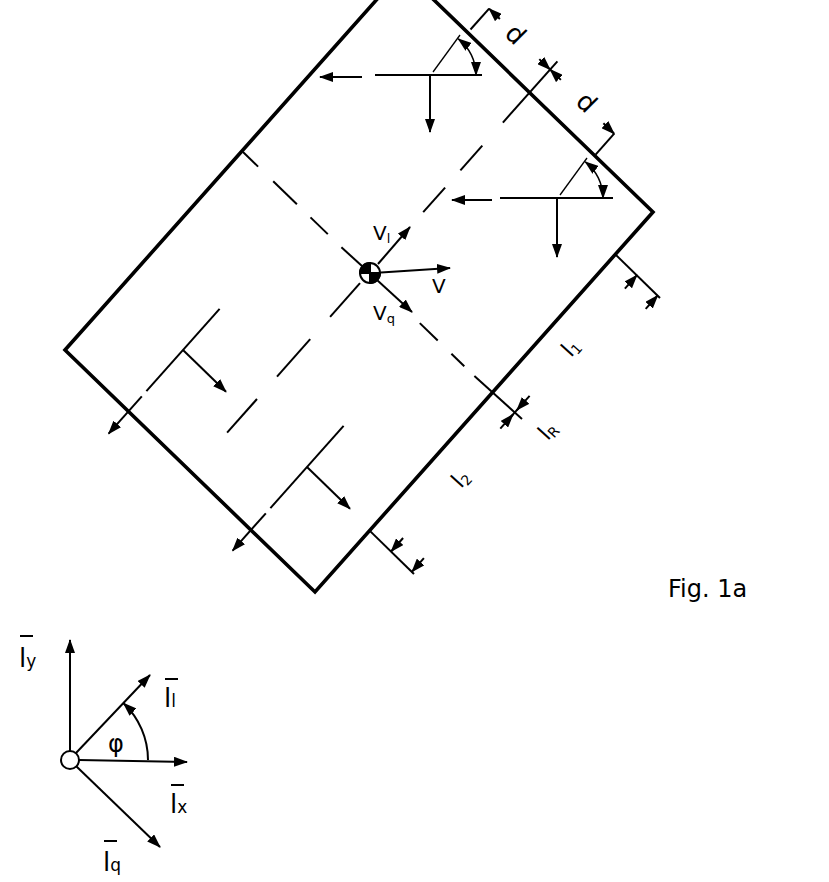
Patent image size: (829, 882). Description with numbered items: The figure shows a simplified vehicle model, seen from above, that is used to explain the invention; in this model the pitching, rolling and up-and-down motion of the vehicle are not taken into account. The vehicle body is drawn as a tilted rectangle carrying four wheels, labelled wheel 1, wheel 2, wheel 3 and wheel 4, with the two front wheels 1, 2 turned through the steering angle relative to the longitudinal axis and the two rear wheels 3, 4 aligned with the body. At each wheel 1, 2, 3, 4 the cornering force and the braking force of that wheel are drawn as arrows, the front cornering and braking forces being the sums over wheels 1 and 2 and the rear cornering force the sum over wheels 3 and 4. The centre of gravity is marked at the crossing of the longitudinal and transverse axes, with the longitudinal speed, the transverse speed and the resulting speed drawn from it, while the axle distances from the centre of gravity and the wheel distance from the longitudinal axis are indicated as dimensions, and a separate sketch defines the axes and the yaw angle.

The front left wheel 1 is at (401, 86).
The front right wheel 2 is at (532, 211).
The rear left wheel 3 is at (158, 396).
The rear right wheel 4 is at (284, 513).